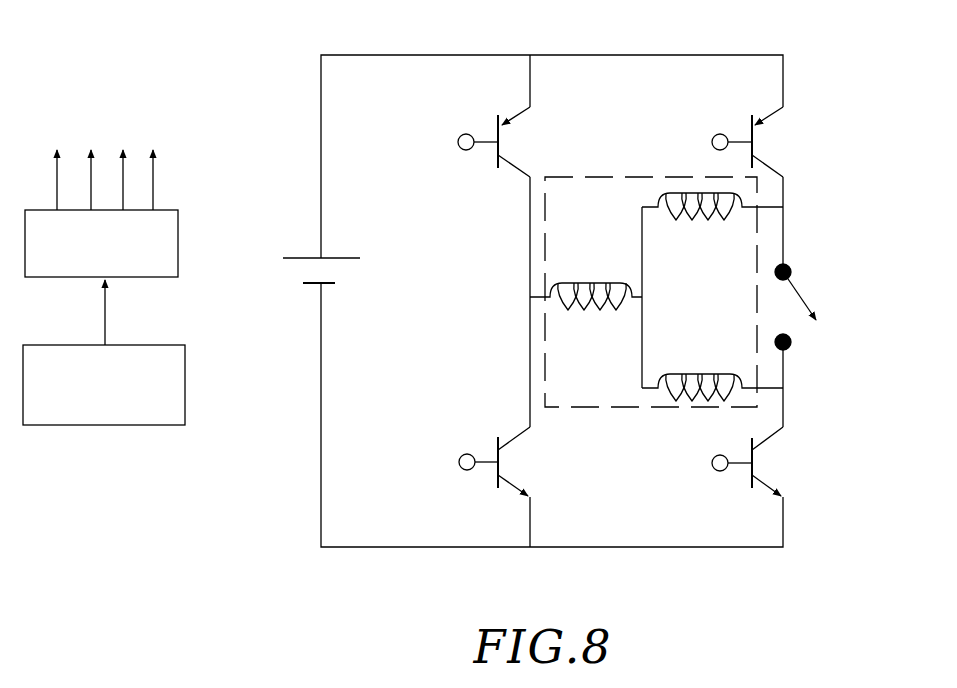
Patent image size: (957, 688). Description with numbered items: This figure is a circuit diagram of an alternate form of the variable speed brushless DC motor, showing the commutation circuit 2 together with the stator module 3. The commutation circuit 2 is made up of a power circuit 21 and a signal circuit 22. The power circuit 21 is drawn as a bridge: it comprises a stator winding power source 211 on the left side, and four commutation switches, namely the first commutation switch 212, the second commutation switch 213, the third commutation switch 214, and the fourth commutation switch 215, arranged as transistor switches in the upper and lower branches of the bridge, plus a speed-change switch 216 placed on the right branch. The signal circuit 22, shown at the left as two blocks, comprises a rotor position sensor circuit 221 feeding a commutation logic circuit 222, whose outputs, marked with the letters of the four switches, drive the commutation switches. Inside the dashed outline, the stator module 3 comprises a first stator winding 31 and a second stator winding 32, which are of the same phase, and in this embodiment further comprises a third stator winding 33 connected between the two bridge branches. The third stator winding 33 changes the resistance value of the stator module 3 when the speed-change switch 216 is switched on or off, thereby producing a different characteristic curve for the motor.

The commutation circuit 2 is at (205, 525).
The power circuit 21 is at (857, 105).
The stator winding power source 211 is at (356, 271).
The first commutation switch 212 is at (458, 137).
The second commutation switch 213 is at (712, 138).
The third commutation switch 214 is at (460, 454).
The fourth commutation switch 215 is at (712, 456).
The speed-change switch 216 is at (793, 268).
The signal circuit 22 is at (187, 141).
The rotor position sensor circuit 221 is at (176, 388).
The commutation logic circuit 222 is at (176, 240).
The stator module 3 is at (635, 177).
The first stator winding 31 is at (716, 218).
The second stator winding 32 is at (712, 373).
The third stator winding 33 is at (612, 285).